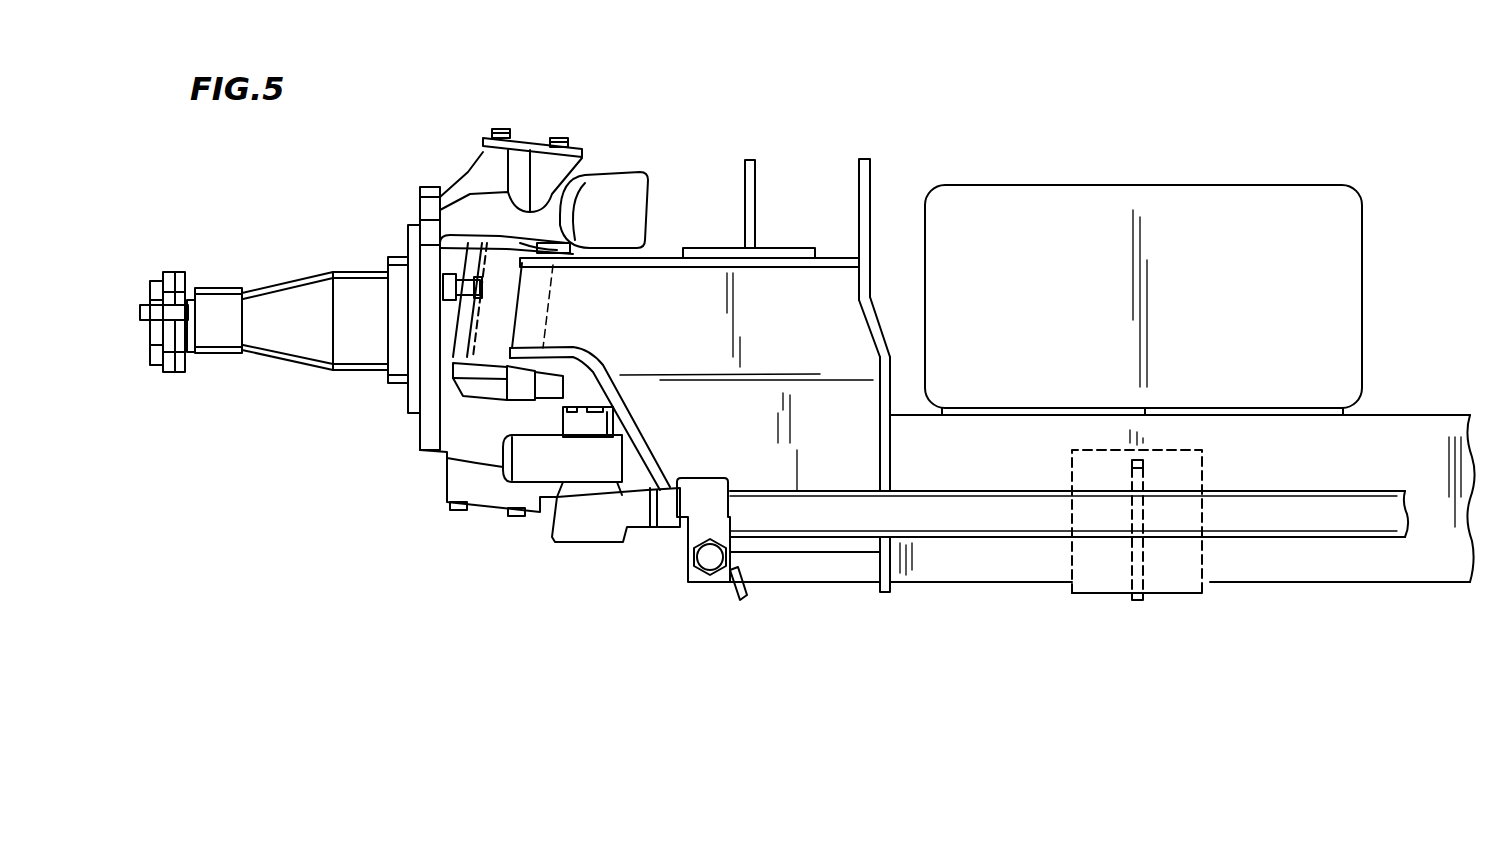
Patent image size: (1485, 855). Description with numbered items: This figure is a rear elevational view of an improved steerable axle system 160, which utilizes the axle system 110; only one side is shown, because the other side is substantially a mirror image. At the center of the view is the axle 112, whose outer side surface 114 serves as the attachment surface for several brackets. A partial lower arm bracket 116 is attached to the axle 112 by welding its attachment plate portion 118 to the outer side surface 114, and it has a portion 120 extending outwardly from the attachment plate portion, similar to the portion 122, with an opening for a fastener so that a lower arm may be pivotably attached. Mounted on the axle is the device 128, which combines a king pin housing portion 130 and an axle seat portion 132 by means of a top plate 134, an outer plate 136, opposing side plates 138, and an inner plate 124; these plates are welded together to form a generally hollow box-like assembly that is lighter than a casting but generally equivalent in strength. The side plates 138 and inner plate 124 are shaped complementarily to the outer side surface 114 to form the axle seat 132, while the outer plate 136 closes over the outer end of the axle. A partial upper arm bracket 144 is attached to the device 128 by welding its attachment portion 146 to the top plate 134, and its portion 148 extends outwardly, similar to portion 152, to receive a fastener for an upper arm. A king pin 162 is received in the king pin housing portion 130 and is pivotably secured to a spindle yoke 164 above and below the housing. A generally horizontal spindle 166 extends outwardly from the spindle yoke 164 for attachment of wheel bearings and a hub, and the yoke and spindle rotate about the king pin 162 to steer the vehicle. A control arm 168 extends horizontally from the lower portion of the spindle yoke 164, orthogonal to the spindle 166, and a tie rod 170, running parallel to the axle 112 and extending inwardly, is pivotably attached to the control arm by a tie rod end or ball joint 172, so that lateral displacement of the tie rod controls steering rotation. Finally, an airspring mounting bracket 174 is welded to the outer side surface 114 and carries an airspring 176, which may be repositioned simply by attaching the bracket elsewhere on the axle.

The axle system 110 is at (1308, 585).
The axle 112 is at (1403, 416).
The outer side surface 114 is at (1397, 585).
The partial lower arm bracket 116 is at (1195, 593).
The attachment plate portion 118 is at (1110, 593).
The portion 120 is at (1140, 600).
The portion 122 is at (888, 595).
The inner plate 124 is at (866, 330).
The device 128 is at (870, 198).
The king pin housing portion 130 is at (640, 258).
The axle seat portion 132 is at (905, 433).
The top plate 134 is at (648, 267).
The outer plate 136 is at (632, 428).
The side plates 138 is at (628, 350).
The partial upper arm bracket 144 is at (749, 160).
The attachment portion 146 is at (770, 248).
The portion 148 is at (745, 185).
The portion 152 is at (863, 157).
The steerable axle system 160 is at (1243, 115).
The king pin 162 is at (553, 305).
The spindle yoke 164 is at (465, 175).
The spindle 166 is at (292, 275).
The control arm 168 is at (487, 457).
The tie rod 170 is at (768, 540).
The tie rod end or ball joint 172 is at (585, 547).
The airspring mounting bracket 174 is at (1270, 420).
The airspring 176 is at (1363, 296).